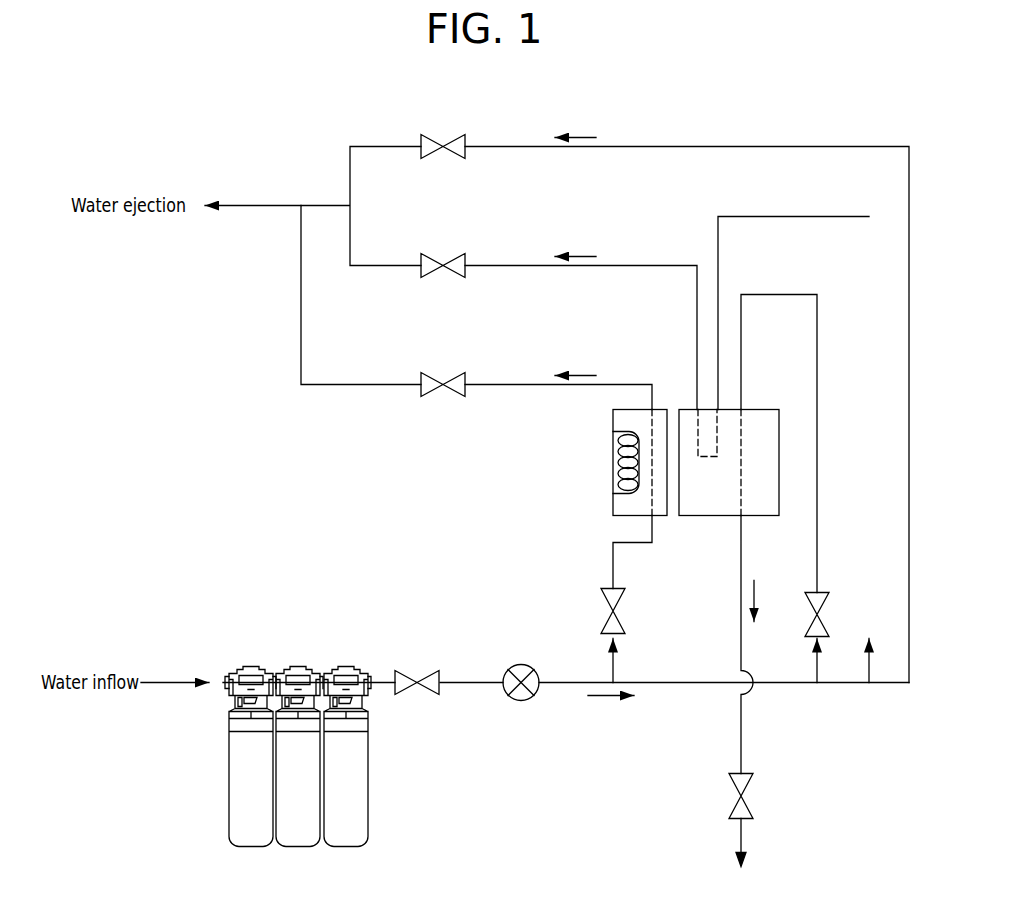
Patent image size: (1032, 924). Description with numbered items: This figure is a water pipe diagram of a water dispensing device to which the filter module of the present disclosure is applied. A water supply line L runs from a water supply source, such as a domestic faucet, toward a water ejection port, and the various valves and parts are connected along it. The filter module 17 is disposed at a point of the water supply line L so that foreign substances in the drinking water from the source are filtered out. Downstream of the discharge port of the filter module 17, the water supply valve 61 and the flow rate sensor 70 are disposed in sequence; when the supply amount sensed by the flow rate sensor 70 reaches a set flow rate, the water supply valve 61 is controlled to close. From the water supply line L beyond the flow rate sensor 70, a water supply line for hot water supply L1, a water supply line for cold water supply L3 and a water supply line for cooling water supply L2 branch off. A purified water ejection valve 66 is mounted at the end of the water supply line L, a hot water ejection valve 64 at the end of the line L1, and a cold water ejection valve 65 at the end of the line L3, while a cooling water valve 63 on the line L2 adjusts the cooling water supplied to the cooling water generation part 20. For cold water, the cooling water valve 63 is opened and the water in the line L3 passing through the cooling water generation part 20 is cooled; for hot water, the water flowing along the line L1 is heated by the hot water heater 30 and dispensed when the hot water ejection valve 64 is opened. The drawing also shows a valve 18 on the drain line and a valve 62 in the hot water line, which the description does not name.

The filter module 17 is at (296, 668).
The drain valve 18 is at (745, 803).
The cooling water generation part 20 is at (763, 410).
The hot water heater 30 is at (612, 447).
The water supply valve 61 is at (409, 678).
The hot water valve 62 is at (604, 604).
The cooling water valve 63 is at (822, 606).
The hot water ejection valve 64 is at (447, 376).
The cold water ejection valve 65 is at (447, 258).
The purified water ejection valve 66 is at (447, 138).
The flow rate sensor 70 is at (520, 668).
The water supply line L is at (470, 698).
The water supply line for hot water supply L1 is at (610, 667).
The water supply line for cooling water supply L2 is at (815, 672).
The water supply line for cold water supply L3 is at (866, 672).